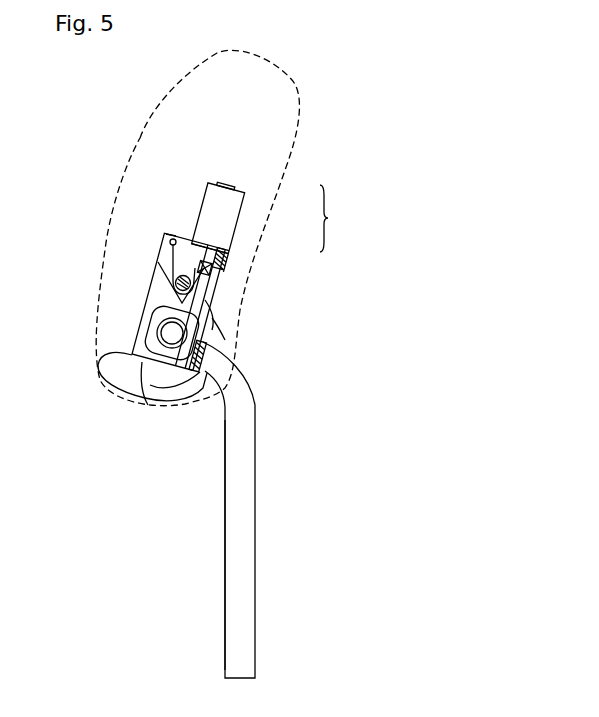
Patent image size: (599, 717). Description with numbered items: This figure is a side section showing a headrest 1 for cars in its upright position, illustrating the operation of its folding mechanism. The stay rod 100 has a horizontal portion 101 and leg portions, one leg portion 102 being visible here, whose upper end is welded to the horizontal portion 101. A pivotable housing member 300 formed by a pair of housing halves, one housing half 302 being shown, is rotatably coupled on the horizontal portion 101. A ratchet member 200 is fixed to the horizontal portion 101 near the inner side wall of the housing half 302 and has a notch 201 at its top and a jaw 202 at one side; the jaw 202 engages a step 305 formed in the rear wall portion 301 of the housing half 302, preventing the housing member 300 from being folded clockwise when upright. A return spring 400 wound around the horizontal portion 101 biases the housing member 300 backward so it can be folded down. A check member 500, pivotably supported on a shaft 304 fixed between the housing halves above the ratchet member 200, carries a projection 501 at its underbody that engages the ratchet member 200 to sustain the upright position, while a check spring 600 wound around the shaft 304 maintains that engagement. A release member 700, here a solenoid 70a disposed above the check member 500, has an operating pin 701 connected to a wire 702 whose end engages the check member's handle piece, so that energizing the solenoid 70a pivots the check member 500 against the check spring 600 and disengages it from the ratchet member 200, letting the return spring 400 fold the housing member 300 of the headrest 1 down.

The headrest 1 is at (140, 138).
The stay rod 100 is at (223, 608).
The horizontal portion 101 is at (157, 328).
The leg portion 102 is at (245, 525).
The ratchet member 200 is at (130, 353).
The notch 201 is at (218, 308).
The jaw 202 is at (218, 324).
The pivotable housing member 300 is at (236, 270).
The rear wall portion 301 is at (200, 378).
The housing half 302 is at (170, 233).
The shaft 304 is at (222, 290).
The step 305 is at (220, 343).
The return spring 400 is at (157, 367).
The check member 500 is at (170, 248).
The projection 501 is at (168, 300).
The check spring 600 is at (175, 288).
The release member 700 is at (275, 227).
The solenoid 70a is at (232, 212).
The operating pin 701 is at (233, 186).
The wire 702 is at (235, 258).